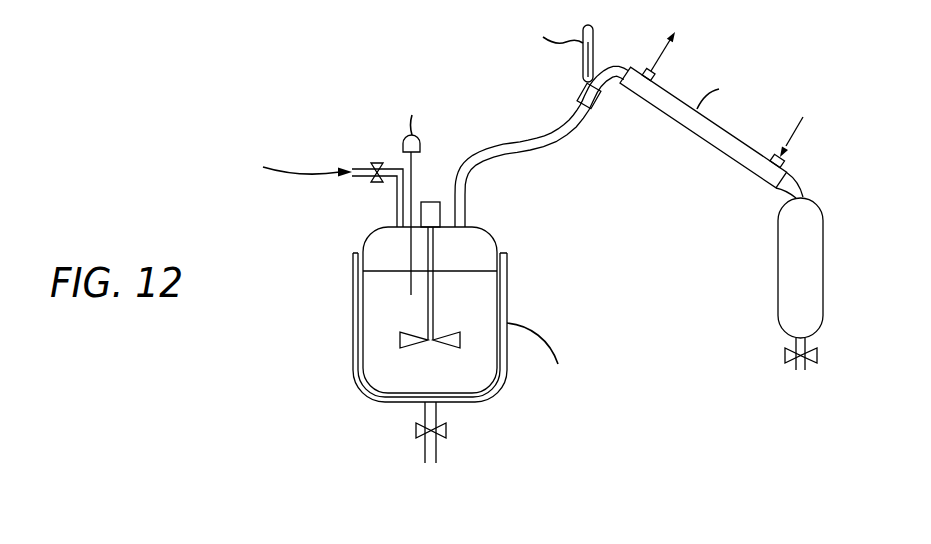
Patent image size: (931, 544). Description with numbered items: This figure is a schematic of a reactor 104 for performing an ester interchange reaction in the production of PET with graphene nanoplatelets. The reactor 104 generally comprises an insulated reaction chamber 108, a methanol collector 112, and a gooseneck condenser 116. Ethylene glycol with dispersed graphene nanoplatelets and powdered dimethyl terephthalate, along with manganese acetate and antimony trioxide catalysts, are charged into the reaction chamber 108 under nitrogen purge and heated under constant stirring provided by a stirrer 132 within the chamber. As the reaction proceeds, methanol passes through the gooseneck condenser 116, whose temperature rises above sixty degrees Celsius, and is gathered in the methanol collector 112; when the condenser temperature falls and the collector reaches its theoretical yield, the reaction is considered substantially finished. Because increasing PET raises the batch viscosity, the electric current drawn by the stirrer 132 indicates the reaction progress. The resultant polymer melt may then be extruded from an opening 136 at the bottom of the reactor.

The reactor 104 is at (303, 88).
The insulated reaction chamber 108 is at (493, 241).
The methanol collector 112 is at (782, 265).
The gooseneck condenser 116 is at (552, 142).
The stirrer 132 is at (400, 342).
The opening 136 is at (416, 434).